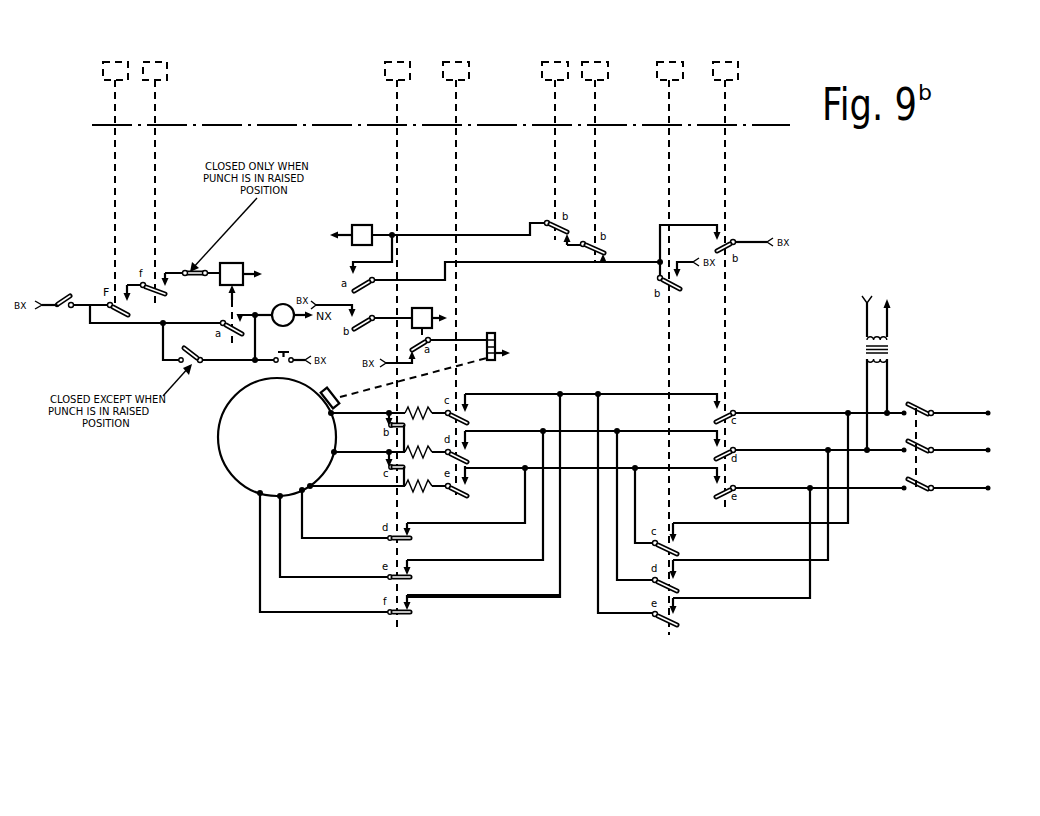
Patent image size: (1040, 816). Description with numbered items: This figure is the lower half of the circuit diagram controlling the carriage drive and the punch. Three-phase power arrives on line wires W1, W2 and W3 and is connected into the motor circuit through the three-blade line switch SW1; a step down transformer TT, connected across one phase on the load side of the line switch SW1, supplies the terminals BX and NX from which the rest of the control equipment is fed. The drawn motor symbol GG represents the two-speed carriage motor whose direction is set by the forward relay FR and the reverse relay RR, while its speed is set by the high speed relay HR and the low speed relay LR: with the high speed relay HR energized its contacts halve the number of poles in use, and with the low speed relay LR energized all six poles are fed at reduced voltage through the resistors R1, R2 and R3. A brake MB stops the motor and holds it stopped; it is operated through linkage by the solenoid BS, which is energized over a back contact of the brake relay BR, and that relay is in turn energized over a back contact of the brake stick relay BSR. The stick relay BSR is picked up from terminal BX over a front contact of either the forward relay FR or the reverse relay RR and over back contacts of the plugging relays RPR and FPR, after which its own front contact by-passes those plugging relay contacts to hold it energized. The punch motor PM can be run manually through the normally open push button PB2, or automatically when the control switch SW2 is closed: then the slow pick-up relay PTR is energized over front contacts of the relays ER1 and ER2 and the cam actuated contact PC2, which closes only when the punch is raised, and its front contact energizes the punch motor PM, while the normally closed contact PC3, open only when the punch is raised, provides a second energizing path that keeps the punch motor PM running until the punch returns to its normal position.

The relay ER1 is at (115, 176).
The relay ER2 is at (155, 176).
The high speed relay HR is at (397, 337).
The low speed relay LR is at (456, 273).
The forward plug relay FPR is at (552, 143).
The reverse plug relay RPR is at (594, 154).
The reverse relay RR is at (670, 341).
The forward relay FR is at (725, 279).
The brake stick relay BSR is at (341, 226).
The slow pick-up relay PTR is at (251, 297).
The contact PC2 is at (191, 284).
The contact PC3 is at (187, 347).
The push button switch PB2 is at (282, 348).
The punch motor PM is at (274, 315).
The brake relay BR is at (438, 316).
The solenoid BS is at (506, 337).
The brake MB is at (332, 389).
The generator GG is at (289, 444).
The resistor R1 is at (418, 407).
The resistor R2 is at (418, 447).
The resistor R3 is at (418, 481).
The step down transformer TT is at (879, 367).
The line switch SW1 is at (920, 441).
The control switch SW2 is at (57, 294).
The line wire W1 is at (972, 414).
The line wire W2 is at (972, 451).
The line wire W3 is at (972, 489).